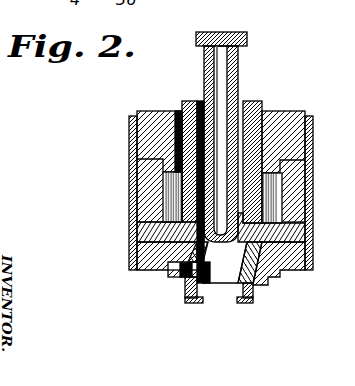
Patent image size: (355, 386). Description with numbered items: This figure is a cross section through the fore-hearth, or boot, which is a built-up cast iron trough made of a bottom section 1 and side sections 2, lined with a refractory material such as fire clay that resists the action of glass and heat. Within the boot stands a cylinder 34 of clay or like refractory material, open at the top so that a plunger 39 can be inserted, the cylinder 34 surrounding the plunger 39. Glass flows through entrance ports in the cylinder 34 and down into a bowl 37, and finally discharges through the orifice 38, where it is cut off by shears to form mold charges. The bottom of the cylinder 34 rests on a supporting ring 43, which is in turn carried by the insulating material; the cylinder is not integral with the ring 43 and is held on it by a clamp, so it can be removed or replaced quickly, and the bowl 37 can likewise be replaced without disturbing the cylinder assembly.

The bottom section 1 is at (283, 276).
The side sections 2 is at (138, 163).
The cylinder 34 is at (180, 135).
The bowl 37 is at (177, 277).
The orifice 38 is at (210, 283).
The plunger 39 is at (205, 190).
The supporting ring 43 is at (182, 222).